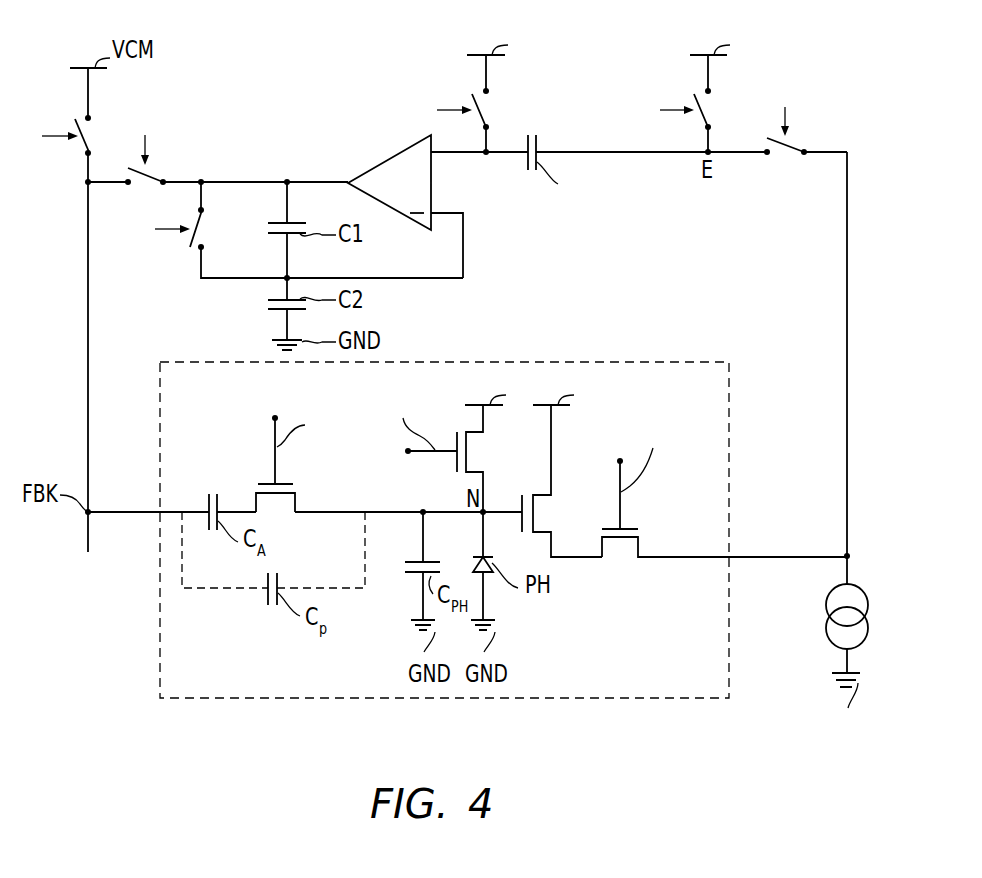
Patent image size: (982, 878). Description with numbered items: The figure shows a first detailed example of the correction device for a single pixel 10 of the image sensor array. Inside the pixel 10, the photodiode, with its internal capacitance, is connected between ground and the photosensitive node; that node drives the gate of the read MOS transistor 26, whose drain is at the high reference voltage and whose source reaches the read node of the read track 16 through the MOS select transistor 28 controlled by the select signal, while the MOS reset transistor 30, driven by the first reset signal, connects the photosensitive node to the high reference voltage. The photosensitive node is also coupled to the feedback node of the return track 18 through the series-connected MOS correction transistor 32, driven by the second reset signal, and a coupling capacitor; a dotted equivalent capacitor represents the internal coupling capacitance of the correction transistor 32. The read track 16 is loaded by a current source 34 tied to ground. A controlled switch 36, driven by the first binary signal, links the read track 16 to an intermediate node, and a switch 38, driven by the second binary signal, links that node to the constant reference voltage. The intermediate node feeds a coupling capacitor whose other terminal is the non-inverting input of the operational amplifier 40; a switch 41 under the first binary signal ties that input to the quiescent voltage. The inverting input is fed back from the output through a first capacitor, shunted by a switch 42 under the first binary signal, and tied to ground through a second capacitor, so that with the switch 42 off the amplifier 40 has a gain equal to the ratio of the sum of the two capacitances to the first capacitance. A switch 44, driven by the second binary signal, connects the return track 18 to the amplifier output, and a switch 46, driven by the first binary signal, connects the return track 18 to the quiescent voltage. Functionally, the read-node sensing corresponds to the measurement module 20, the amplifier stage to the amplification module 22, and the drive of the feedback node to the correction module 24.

The pixel 10 is at (730, 389).
The read track 16 is at (847, 380).
The return track 18 is at (88, 386).
The measurement module 20 is at (764, 190).
The amplification module 22 is at (508, 205).
The correction module 24 is at (200, 82).
The read MOS transistor 26 is at (544, 491).
The MOS select transistor 28 is at (604, 560).
The MOS reset transistor 30 is at (470, 478).
The MOS correction transistor 32 is at (296, 502).
The current source 34 is at (826, 606).
The controlled switch 36 is at (790, 153).
The switch 38 is at (711, 110).
The operational amplifier 40 is at (388, 158).
The switch 41 is at (489, 110).
The switch 42 is at (204, 230).
The switch 44 is at (145, 188).
The switch 46 is at (92, 135).